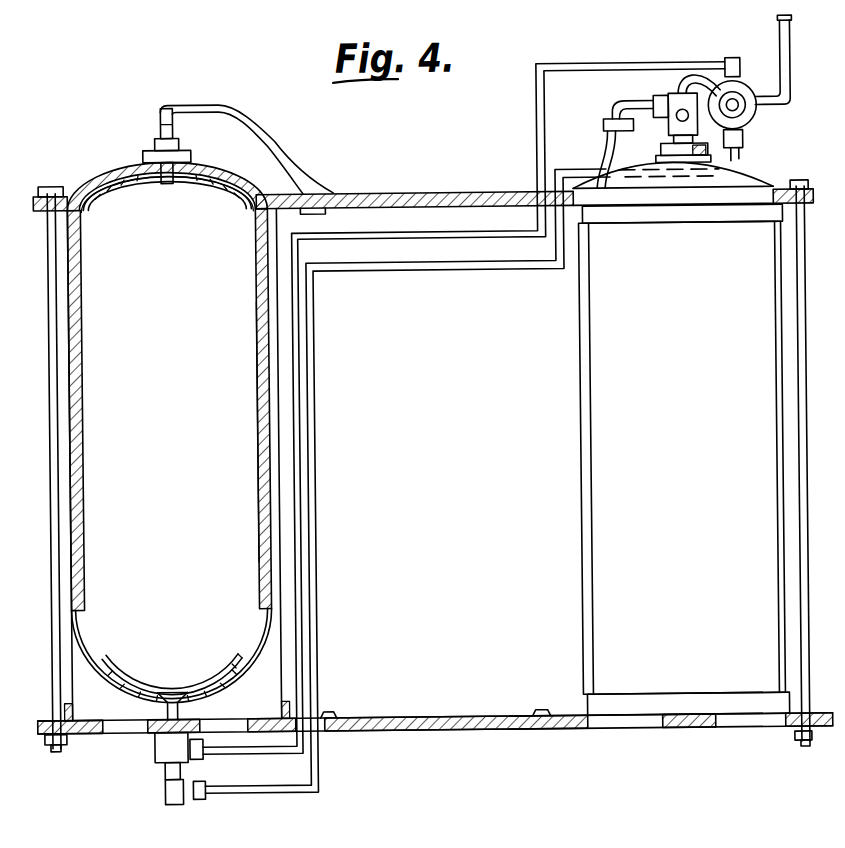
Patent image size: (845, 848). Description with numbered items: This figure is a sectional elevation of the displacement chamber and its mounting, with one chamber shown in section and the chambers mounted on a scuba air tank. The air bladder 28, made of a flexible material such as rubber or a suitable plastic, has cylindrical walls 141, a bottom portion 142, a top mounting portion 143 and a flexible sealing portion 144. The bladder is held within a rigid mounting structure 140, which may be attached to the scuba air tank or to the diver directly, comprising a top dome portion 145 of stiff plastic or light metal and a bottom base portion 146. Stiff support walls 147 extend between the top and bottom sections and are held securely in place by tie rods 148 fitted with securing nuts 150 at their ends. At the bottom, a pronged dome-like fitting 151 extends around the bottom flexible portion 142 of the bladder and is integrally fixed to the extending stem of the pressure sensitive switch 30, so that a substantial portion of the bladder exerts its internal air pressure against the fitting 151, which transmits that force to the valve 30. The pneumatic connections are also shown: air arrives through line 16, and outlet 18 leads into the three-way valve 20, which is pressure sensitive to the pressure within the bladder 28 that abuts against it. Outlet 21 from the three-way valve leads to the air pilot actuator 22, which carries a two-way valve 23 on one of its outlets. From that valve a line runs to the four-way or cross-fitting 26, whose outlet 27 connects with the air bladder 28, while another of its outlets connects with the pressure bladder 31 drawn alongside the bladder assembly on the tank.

The line 16 is at (784, 38).
The outlet 18 is at (316, 592).
The three-way valve 20 is at (164, 747).
The outlet 21 is at (624, 50).
The air pilot actuator 22 is at (751, 93).
The two-way valve 23 is at (751, 110).
The four-way fitting 26 is at (671, 95).
The outlet 27 is at (286, 161).
The air bladder 28 is at (258, 420).
The pressure sensitive switch 30 is at (154, 712).
The pressure bladder 31 is at (620, 432).
The mounting structure 140 is at (454, 731).
The cylindrical walls 141 is at (83, 394).
The bottom portion 142 is at (125, 684).
The top mounting portion 143 is at (98, 204).
The flexible sealing portion 144 is at (193, 188).
The top dome portion 145 is at (98, 180).
The bottom base portion 146 is at (84, 730).
The support walls 147 is at (269, 235).
The tie rods 148 is at (54, 289).
The securing nuts 150 is at (54, 184).
The pronged dome-like fitting 151 is at (210, 695).